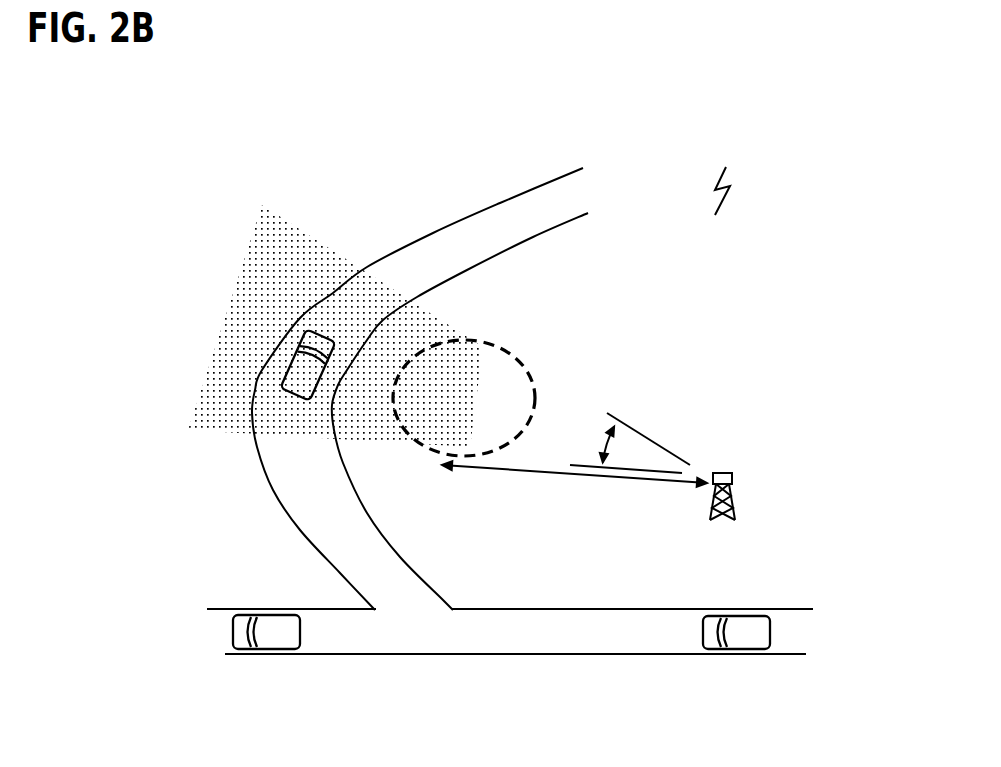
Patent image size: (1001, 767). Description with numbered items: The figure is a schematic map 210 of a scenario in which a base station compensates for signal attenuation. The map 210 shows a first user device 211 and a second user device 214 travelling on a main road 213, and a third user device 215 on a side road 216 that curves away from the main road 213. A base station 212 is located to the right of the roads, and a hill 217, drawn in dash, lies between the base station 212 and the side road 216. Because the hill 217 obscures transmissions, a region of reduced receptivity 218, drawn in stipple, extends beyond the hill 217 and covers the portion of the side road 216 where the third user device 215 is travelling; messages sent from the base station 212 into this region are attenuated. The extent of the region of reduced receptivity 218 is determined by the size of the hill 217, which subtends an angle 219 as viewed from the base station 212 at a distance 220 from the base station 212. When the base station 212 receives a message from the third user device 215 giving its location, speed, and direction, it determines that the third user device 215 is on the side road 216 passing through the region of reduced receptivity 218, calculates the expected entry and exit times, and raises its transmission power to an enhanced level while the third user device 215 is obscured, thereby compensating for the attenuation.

The map 210 is at (722, 178).
The first user device 211 is at (757, 649).
The base station 212 is at (727, 468).
The main road 213 is at (623, 609).
The second user device 214 is at (275, 650).
The third user device 215 is at (285, 362).
The side road 216 is at (453, 222).
The hill 217 is at (515, 357).
The region of reduced receptivity 218 is at (295, 222).
The angle 219 is at (603, 440).
The distance 220 is at (538, 468).